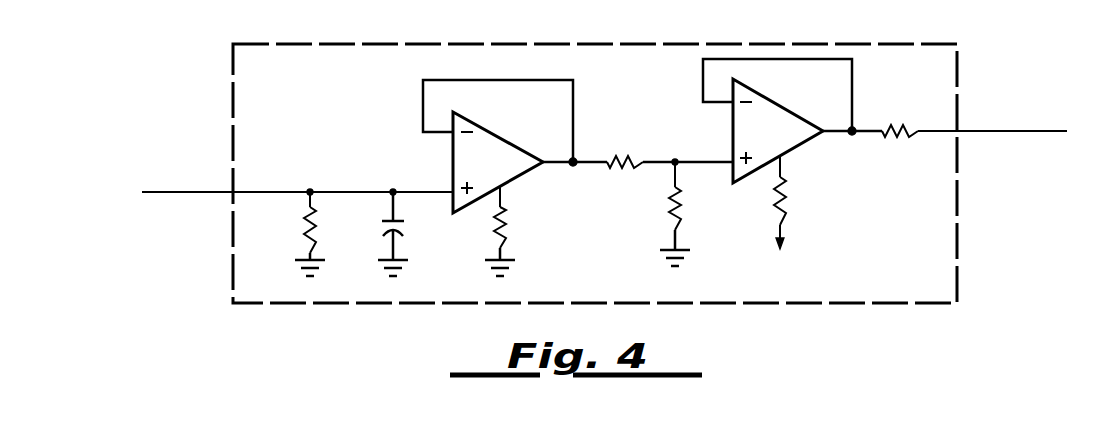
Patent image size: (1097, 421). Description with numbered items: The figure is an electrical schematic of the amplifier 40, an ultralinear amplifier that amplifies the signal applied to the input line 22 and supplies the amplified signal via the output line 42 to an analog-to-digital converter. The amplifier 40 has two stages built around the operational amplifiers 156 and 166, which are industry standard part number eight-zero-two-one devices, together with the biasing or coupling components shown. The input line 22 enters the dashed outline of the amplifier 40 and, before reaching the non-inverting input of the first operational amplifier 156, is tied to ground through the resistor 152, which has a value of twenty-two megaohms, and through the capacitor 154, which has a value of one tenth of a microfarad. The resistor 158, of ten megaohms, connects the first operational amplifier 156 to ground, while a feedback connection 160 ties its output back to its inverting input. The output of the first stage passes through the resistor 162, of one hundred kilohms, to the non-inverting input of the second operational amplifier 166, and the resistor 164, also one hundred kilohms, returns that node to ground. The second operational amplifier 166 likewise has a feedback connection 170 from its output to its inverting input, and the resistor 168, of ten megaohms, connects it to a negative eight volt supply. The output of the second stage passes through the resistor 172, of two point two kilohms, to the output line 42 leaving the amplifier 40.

The line 22 is at (170, 192).
The amplifier 40 is at (893, 303).
The line 42 is at (1035, 131).
The resistor 152 is at (314, 226).
The capacitor 154 is at (400, 228).
The operational amplifier 156 is at (512, 142).
The resistor 158 is at (505, 220).
The feedback connection 160 is at (573, 88).
The resistor 162 is at (608, 150).
The resistor 164 is at (680, 204).
The operational amplifier 166 is at (795, 113).
The resistor 168 is at (790, 203).
The feedback connection 170 is at (852, 72).
The resistor 172 is at (883, 125).